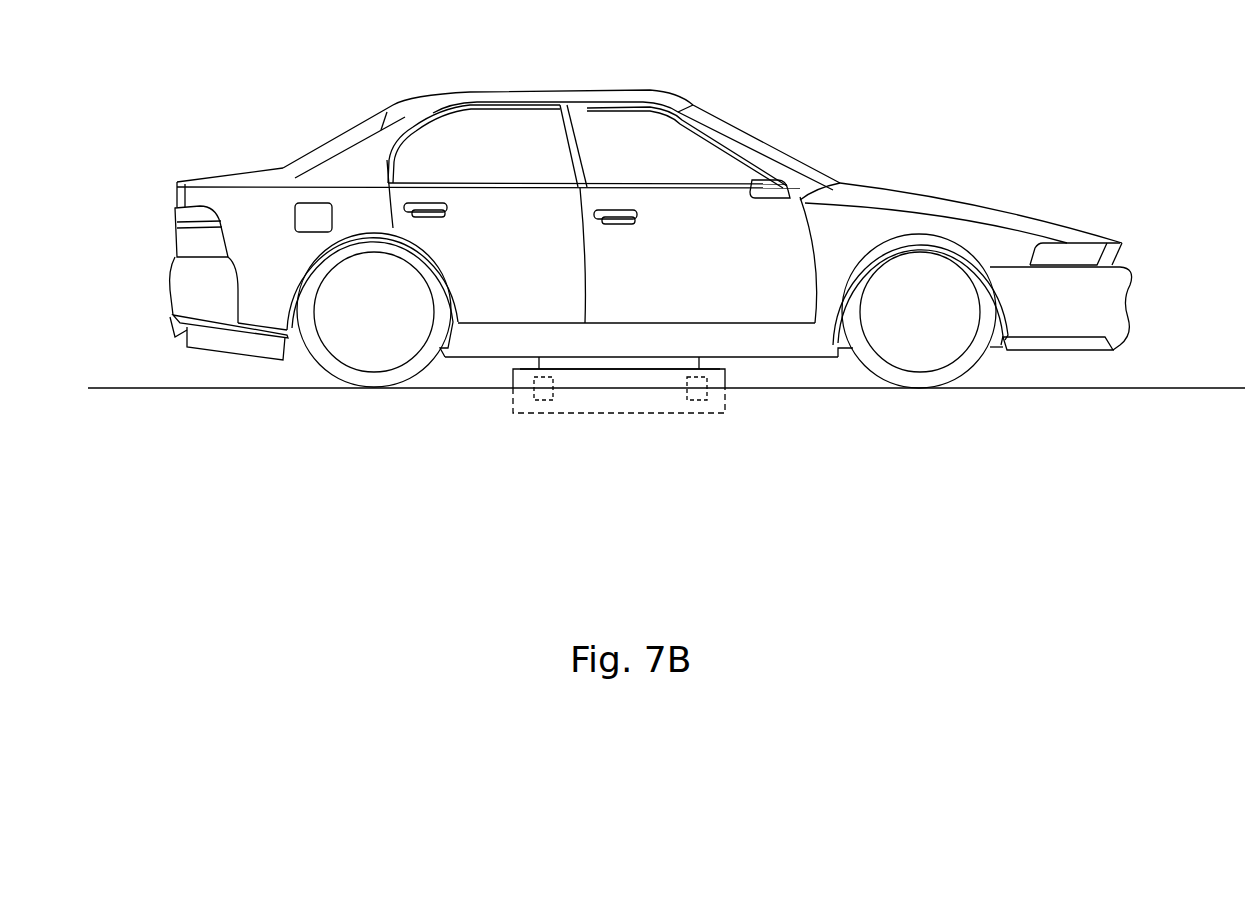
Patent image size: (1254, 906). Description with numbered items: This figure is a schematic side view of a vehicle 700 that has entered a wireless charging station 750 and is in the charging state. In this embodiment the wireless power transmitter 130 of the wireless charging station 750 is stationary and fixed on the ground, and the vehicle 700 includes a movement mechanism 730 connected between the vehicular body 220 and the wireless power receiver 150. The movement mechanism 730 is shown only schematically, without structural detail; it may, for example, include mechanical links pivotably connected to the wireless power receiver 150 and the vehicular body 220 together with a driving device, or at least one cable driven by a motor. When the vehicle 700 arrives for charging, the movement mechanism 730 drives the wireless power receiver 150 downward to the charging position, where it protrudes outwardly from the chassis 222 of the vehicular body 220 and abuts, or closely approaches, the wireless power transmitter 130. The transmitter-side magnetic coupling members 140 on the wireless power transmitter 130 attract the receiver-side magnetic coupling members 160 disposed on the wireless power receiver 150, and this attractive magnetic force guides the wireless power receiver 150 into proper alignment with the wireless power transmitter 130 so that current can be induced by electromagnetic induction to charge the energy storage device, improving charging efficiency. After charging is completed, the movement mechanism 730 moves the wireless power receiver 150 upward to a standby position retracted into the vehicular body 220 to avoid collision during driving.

The vehicle 700 is at (651, 284).
The vehicular body 220 is at (877, 193).
The chassis 222 is at (798, 348).
The movement mechanism 730 is at (602, 362).
The wireless power transmitter 130 is at (648, 401).
The wireless power receiver 150 is at (566, 380).
The receiver-side magnetic coupling members 160 is at (542, 402).
The transmitter-side magnetic coupling members 140 is at (697, 393).
The wireless charging station 750 is at (383, 451).